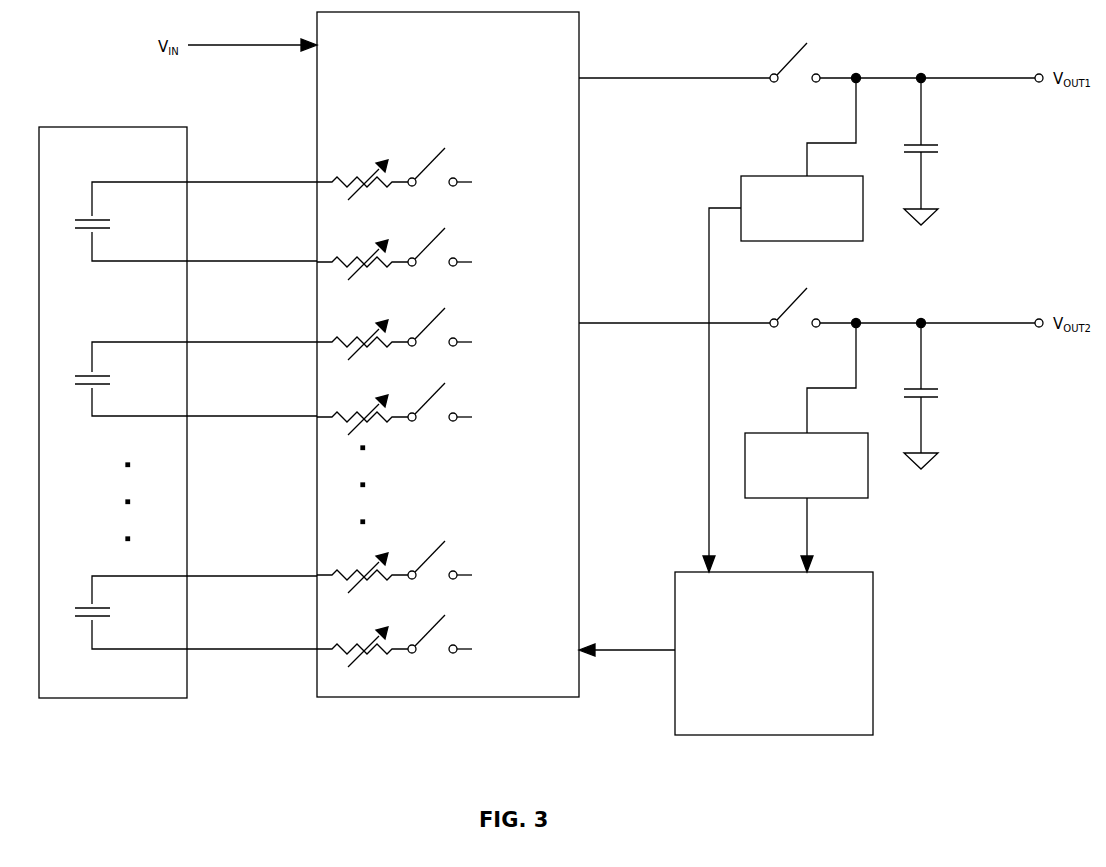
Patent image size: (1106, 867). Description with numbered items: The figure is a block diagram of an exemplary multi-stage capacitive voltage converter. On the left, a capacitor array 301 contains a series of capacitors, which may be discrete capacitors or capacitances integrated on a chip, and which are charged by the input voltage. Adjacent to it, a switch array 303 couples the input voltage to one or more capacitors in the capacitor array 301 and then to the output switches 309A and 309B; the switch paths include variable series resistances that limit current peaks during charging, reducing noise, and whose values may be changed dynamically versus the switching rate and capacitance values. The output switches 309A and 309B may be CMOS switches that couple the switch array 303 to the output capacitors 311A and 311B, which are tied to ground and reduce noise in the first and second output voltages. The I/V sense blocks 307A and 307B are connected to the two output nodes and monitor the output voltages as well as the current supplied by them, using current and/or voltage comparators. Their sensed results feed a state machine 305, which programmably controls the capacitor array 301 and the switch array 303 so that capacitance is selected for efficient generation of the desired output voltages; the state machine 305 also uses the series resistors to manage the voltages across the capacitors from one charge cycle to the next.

The capacitor array 301 is at (178, 412).
The switch array 303 is at (448, 354).
The state machine 305 is at (726, 653).
The I/V sense block 307A is at (783, 325).
The I/V sense block 307B is at (806, 447).
The output switch 309A is at (791, 62).
The output switch 309B is at (791, 307).
The output capacitor 311A is at (927, 143).
The output capacitor 311B is at (928, 388).